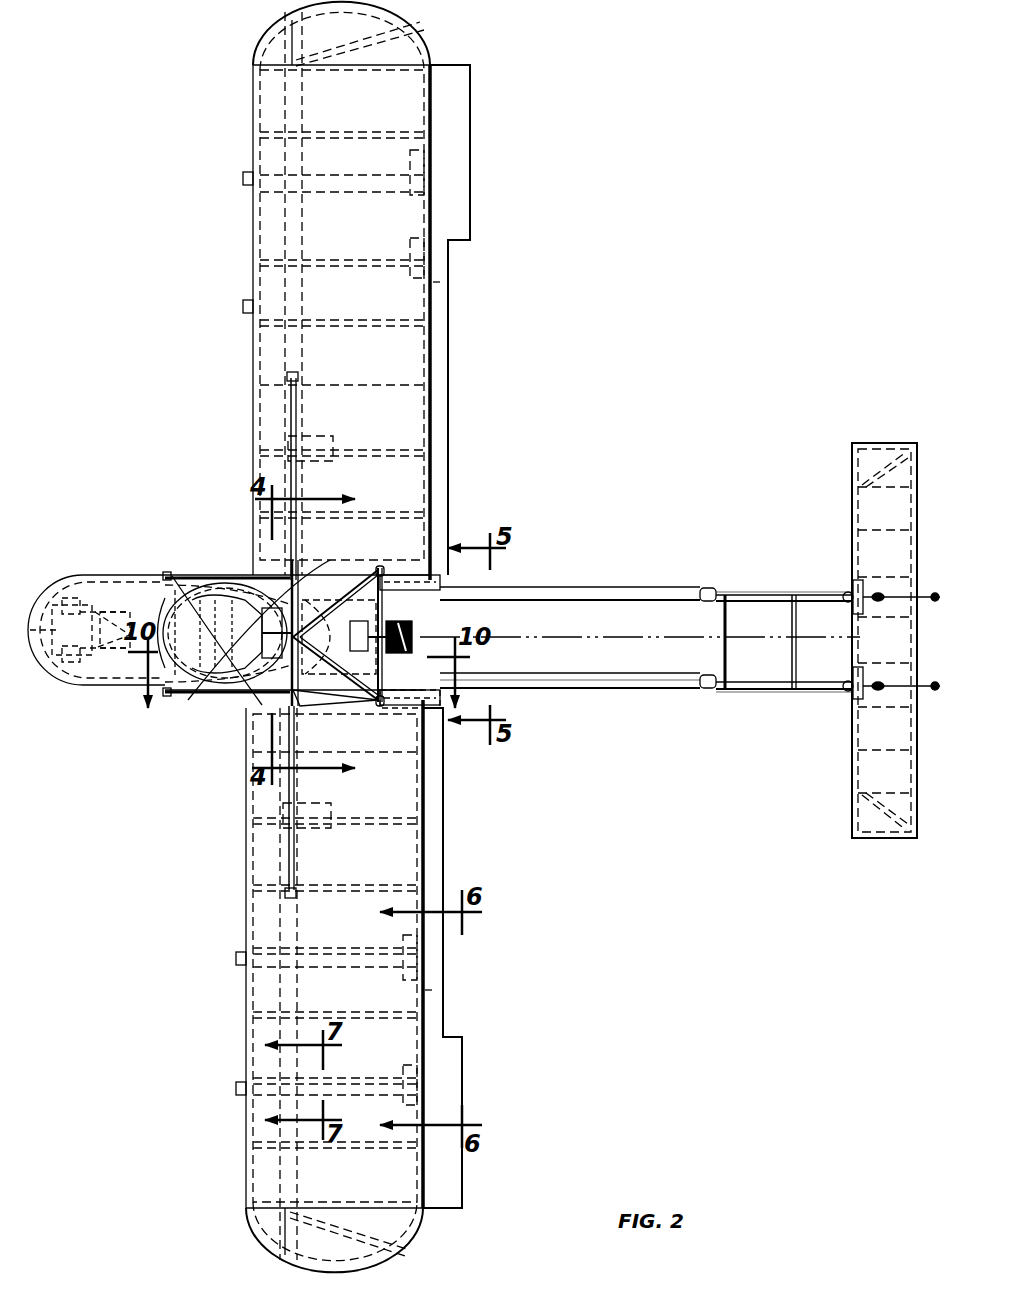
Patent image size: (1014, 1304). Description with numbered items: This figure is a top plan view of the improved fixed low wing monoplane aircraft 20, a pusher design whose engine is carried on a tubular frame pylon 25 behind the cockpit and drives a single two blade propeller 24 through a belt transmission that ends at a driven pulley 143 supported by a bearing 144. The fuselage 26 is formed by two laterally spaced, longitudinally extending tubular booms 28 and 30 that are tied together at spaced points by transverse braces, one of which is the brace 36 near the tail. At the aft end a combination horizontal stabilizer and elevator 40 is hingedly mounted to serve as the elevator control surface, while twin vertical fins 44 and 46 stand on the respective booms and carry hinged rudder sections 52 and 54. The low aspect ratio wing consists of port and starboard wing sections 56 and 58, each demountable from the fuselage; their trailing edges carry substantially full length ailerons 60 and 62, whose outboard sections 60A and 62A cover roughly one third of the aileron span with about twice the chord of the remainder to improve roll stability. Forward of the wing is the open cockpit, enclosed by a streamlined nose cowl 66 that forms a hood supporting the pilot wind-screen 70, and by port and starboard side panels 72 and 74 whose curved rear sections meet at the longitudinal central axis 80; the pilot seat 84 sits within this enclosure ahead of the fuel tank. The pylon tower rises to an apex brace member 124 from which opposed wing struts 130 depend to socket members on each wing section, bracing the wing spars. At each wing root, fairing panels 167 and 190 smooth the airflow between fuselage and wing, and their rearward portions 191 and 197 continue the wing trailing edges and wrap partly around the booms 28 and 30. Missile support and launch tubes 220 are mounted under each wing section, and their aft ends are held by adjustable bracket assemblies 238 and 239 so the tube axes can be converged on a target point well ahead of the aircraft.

The aircraft 20 is at (497, 466).
The two blade propeller 24 is at (412, 633).
The tubular frame pylon 25 is at (285, 600).
The fuselage 26 is at (516, 690).
The tubular boom 28 is at (578, 688).
The tubular boom 30 is at (582, 588).
The transverse brace 36 is at (725, 650).
The combination horizontal stabilizer and elevator 40 is at (852, 510).
The vertical stabilizer or fin 44 is at (738, 692).
The vertical stabilizer or fin 46 is at (757, 594).
The hinged rudder section 52 is at (920, 686).
The hinged rudder section 54 is at (922, 597).
The port wing section 56 is at (243, 912).
The starboard wing section 58 is at (248, 383).
The aileron 60 is at (443, 855).
The aileron section 60A is at (464, 1200).
The aileron 62 is at (448, 406).
The aileron section 62A is at (460, 183).
The streamlined nose cowl 66 is at (55, 678).
The pilot wind-screen 70 is at (190, 683).
The port side panel 72 is at (265, 695).
The starboard side panel 74 is at (231, 578).
The longitudinal central axis 80 is at (612, 635).
The pilot seat 84 is at (238, 668).
The apex brace member 124 is at (178, 577).
The wing strut 130 is at (291, 410).
The driven pulley 143 is at (387, 652).
The bearing 144 is at (379, 574).
The fairing panel 167 is at (318, 700).
The fairing panel 190 is at (332, 562).
The rearward portion of fairing panel 191 is at (430, 700).
The rearward portion of fairing panel 197 is at (420, 588).
The missile support and launch tube 220 is at (243, 178).
The adjustable missile launch tube support bracket assembly 238 is at (432, 990).
The bracket assembly 239 is at (440, 282).